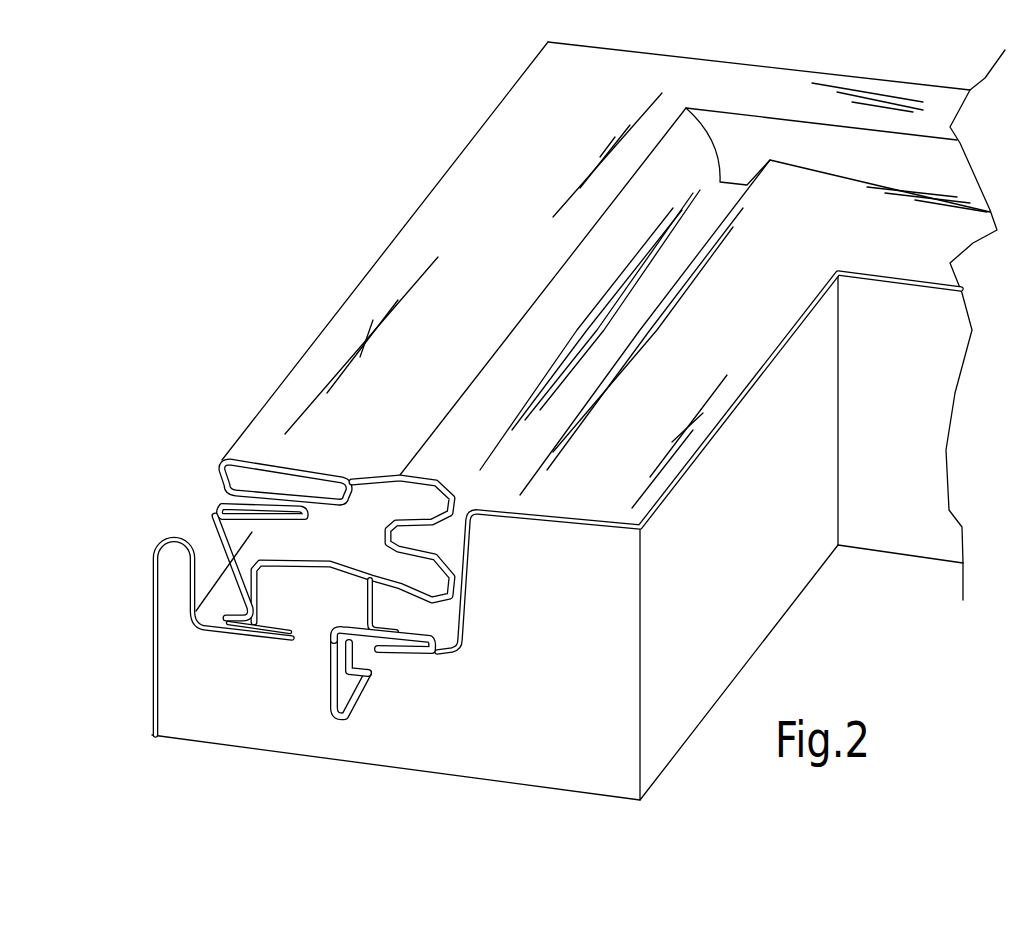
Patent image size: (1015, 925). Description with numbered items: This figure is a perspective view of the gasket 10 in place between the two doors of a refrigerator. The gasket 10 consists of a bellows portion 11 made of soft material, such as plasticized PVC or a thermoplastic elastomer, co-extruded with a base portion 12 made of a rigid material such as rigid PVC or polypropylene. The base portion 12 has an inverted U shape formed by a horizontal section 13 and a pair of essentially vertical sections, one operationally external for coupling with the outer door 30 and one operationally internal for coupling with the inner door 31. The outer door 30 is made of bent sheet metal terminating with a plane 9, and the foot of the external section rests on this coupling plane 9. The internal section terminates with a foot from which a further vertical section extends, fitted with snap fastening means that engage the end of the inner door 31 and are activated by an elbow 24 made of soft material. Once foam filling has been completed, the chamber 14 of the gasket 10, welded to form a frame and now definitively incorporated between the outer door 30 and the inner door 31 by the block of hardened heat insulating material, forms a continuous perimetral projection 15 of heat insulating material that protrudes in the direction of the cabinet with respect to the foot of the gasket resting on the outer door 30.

The plane 9 is at (277, 642).
The gasket 10 is at (295, 310).
The bellows portion 11 is at (275, 413).
The base portion 12 is at (370, 548).
The horizontal section 13 is at (317, 565).
The chamber 14 is at (323, 618).
The continuous perimetral projection 15 is at (255, 576).
The elbow 24 is at (350, 717).
The outer door 30 is at (150, 653).
The inner door 31 is at (718, 407).